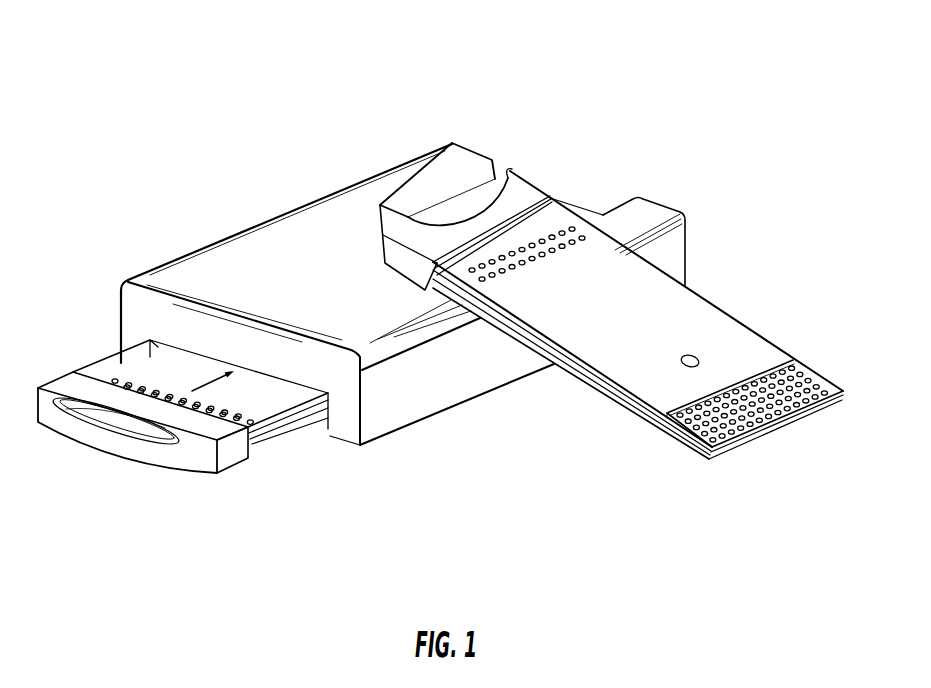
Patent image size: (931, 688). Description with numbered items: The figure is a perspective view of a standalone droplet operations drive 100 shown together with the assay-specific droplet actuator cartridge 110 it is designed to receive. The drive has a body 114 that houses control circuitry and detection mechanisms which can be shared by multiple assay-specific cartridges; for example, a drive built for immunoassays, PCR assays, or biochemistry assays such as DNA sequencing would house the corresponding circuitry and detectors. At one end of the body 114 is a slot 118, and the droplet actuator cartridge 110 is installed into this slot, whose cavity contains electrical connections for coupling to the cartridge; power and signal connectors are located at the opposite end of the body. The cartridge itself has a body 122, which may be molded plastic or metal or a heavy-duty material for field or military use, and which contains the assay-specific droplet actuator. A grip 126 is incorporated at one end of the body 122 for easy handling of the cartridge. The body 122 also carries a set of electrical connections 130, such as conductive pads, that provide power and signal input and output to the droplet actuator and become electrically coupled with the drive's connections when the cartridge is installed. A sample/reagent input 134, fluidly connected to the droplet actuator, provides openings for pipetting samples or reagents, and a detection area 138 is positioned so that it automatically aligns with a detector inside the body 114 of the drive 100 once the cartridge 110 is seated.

The droplet operations drive 100 is at (295, 66).
The droplet actuator cartridge 110 is at (615, 409).
The body 114 is at (218, 241).
The slot 118 is at (147, 340).
The body 122 is at (601, 428).
The grip 126 is at (520, 187).
The electrical connections 130 is at (818, 372).
The sample/reagent input 134 is at (578, 245).
The detection area 138 is at (699, 357).